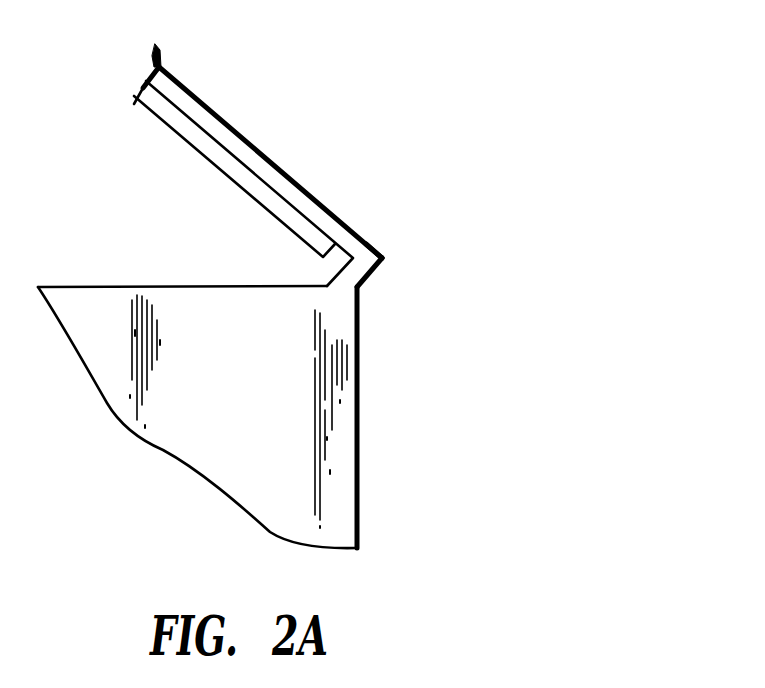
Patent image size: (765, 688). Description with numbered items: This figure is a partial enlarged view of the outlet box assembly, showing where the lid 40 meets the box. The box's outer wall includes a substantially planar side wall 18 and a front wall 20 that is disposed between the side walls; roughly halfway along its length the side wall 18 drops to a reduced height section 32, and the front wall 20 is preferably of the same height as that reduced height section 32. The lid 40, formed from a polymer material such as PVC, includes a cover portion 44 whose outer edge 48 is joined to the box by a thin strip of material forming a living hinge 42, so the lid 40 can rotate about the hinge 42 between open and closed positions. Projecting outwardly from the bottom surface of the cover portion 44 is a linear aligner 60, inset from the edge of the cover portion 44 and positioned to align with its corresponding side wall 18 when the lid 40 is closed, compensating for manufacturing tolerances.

The side wall 18 is at (170, 432).
The front wall 20 is at (358, 460).
The reduced height section 32 is at (178, 315).
The lid 40 is at (163, 63).
The living hinge 42 is at (374, 266).
The cover portion 44 is at (275, 165).
The outer edge 48 is at (360, 234).
The linear aligner 60 is at (152, 100).